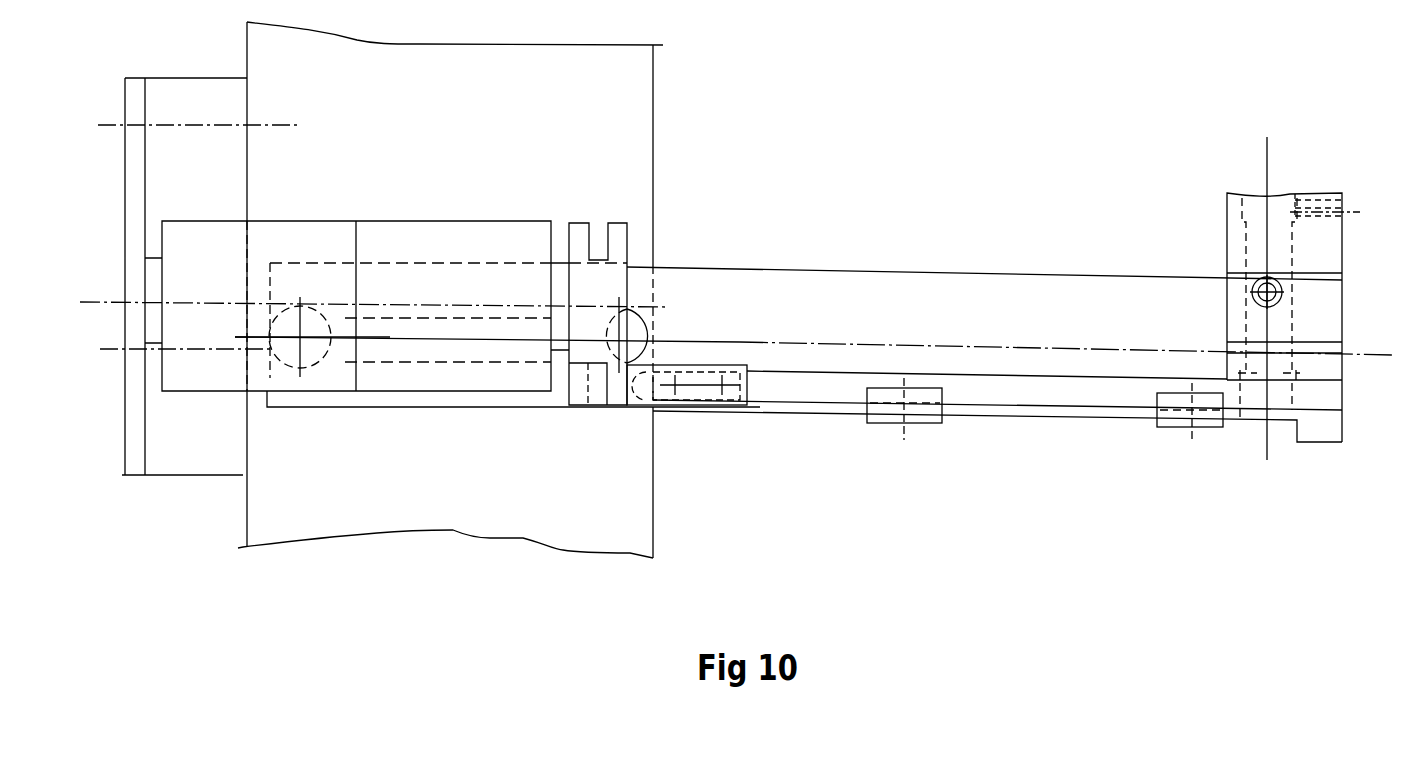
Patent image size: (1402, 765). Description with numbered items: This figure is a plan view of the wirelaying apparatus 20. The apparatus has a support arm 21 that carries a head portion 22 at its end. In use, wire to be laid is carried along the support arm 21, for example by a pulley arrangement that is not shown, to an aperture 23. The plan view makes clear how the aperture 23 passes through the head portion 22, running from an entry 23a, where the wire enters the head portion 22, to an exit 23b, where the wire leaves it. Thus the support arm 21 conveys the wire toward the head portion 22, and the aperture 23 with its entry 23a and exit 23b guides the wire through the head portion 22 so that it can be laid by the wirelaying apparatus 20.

The wirelaying apparatus 20 is at (680, 168).
The support arm 21 is at (857, 305).
The head portion 22 is at (1316, 245).
The aperture 23 is at (1258, 320).
The entry 23a is at (1250, 415).
The exit 23b is at (1258, 205).